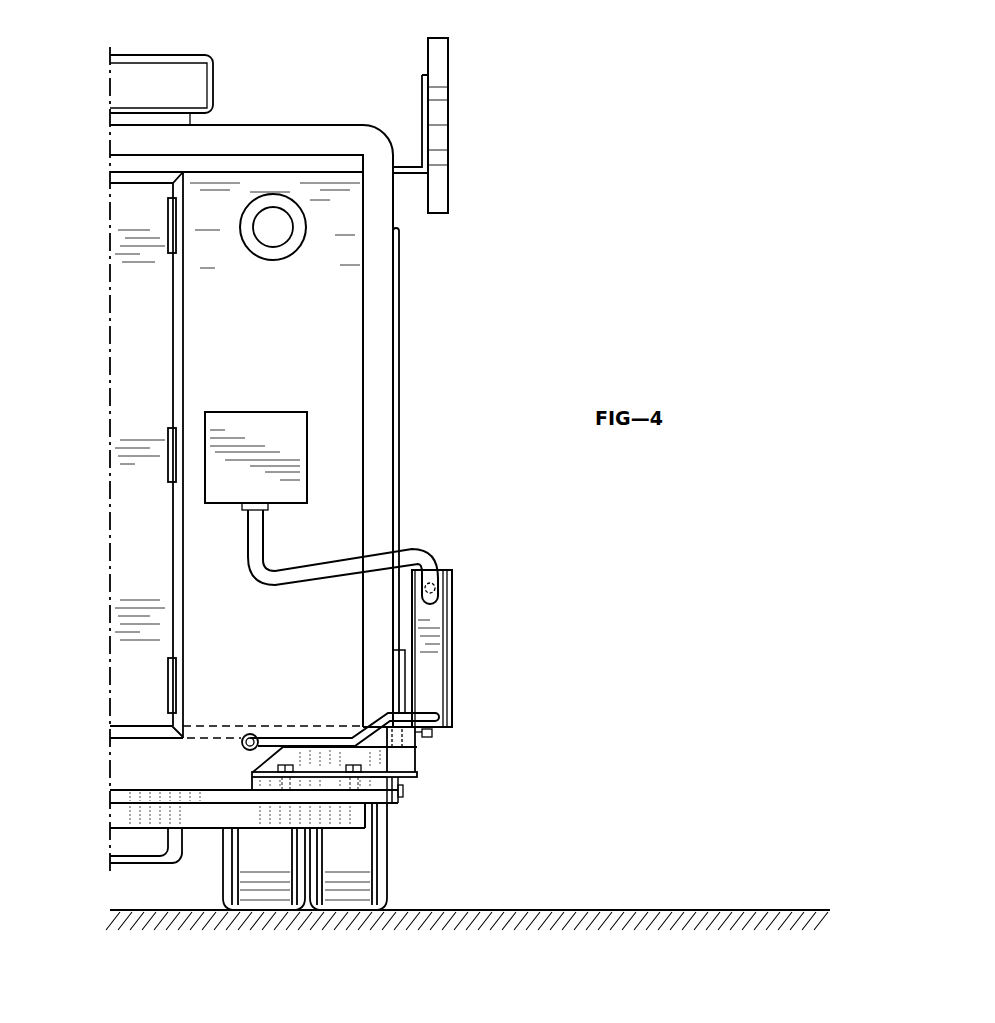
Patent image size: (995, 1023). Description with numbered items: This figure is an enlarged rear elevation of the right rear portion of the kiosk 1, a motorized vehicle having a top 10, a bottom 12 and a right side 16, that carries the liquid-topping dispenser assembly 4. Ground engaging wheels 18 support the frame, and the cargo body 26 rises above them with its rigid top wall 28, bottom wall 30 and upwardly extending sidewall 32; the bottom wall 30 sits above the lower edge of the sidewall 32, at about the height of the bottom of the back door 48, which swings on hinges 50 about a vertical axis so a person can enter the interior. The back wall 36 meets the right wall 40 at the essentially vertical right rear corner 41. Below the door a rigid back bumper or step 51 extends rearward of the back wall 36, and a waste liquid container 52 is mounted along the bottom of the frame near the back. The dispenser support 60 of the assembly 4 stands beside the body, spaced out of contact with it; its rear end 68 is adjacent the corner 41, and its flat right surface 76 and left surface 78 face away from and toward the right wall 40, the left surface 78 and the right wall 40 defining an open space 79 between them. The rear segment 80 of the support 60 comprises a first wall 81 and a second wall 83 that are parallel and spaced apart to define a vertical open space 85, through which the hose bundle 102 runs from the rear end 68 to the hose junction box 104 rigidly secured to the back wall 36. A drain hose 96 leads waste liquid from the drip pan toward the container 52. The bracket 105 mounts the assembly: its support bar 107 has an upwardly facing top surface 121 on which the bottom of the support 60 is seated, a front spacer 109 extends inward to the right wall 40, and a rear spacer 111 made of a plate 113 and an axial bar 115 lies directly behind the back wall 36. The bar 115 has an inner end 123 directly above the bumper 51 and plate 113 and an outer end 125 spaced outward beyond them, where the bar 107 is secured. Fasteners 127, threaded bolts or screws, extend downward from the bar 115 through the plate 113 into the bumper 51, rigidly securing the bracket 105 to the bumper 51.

The kiosk 1 is at (468, 499).
The liquid-topping dispenser assembly 4 is at (510, 648).
The top 10 is at (238, 100).
The bottom 12 is at (468, 862).
The right side 16 is at (468, 499).
The ground engaging wheels 18 is at (388, 863).
The cargo body 26 is at (308, 188).
The top wall 28 is at (337, 123).
The bottom wall 30 is at (216, 728).
The sidewall 32 is at (467, 125).
The back wall 36 is at (238, 325).
The right wall 40 is at (393, 200).
The right rear corner 41 is at (385, 306).
The back door 48 is at (153, 584).
The hinges 50 is at (168, 213).
The back bumper or step 51 is at (133, 793).
The waste liquid reservoir or container 52 is at (143, 847).
The dispenser support 60 is at (510, 648).
The rear end 68 is at (450, 639).
The first surface or right side 76 is at (457, 590).
The second surface or left side 78 is at (348, 603).
The open space 79 is at (402, 634).
The rear segment 80 is at (510, 648).
The first wall 81 is at (510, 648).
The second wall 83 is at (412, 595).
The open space 85 is at (430, 655).
The drain hose 96 is at (428, 712).
The hose bundle 102 is at (248, 567).
The hose cover or hose junction box 104 is at (272, 428).
The bracket 105 is at (465, 753).
The support bar 107 is at (425, 753).
The front spacer or mounting member 109 is at (400, 805).
The rear spacer or mounting member 111 is at (338, 787).
The plate 113 is at (248, 784).
The axial bar 115 is at (302, 762).
The top surface 121 is at (440, 720).
The inner or left end 123 is at (248, 773).
The outer or right end 125 is at (417, 776).
The fasteners 127 is at (355, 763).